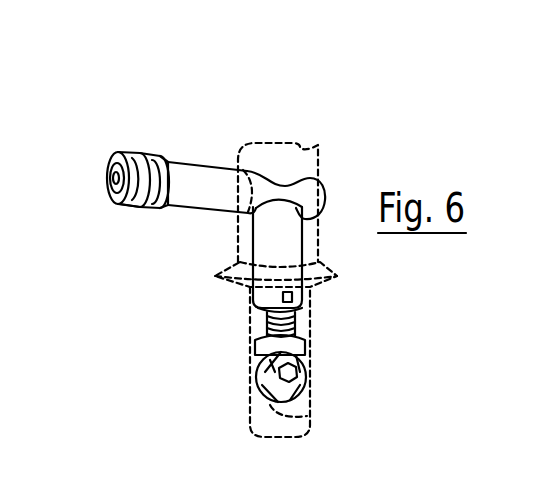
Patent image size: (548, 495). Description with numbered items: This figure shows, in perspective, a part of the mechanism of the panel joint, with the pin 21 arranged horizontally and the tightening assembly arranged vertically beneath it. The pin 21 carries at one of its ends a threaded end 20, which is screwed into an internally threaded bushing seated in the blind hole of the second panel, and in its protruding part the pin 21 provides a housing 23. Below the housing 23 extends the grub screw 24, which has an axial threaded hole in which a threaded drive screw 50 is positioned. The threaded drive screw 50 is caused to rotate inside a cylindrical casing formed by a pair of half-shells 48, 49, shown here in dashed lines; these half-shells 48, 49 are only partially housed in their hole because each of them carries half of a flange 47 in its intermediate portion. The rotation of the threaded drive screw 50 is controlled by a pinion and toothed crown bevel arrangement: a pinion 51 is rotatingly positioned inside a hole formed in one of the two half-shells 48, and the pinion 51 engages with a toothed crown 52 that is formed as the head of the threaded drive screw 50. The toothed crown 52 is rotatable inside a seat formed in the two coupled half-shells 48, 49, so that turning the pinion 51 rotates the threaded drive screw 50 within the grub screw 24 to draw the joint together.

The threaded end 20 is at (112, 178).
The pin 21 is at (197, 165).
The housing 23 is at (284, 183).
The grub screw 24 is at (265, 250).
The flange 47 is at (228, 269).
The half-shell 48 is at (318, 148).
The half-shell 49 is at (137, 205).
The threaded drive screw 50 is at (296, 319).
The pinion 51 is at (255, 388).
The toothed crown 52 is at (300, 350).